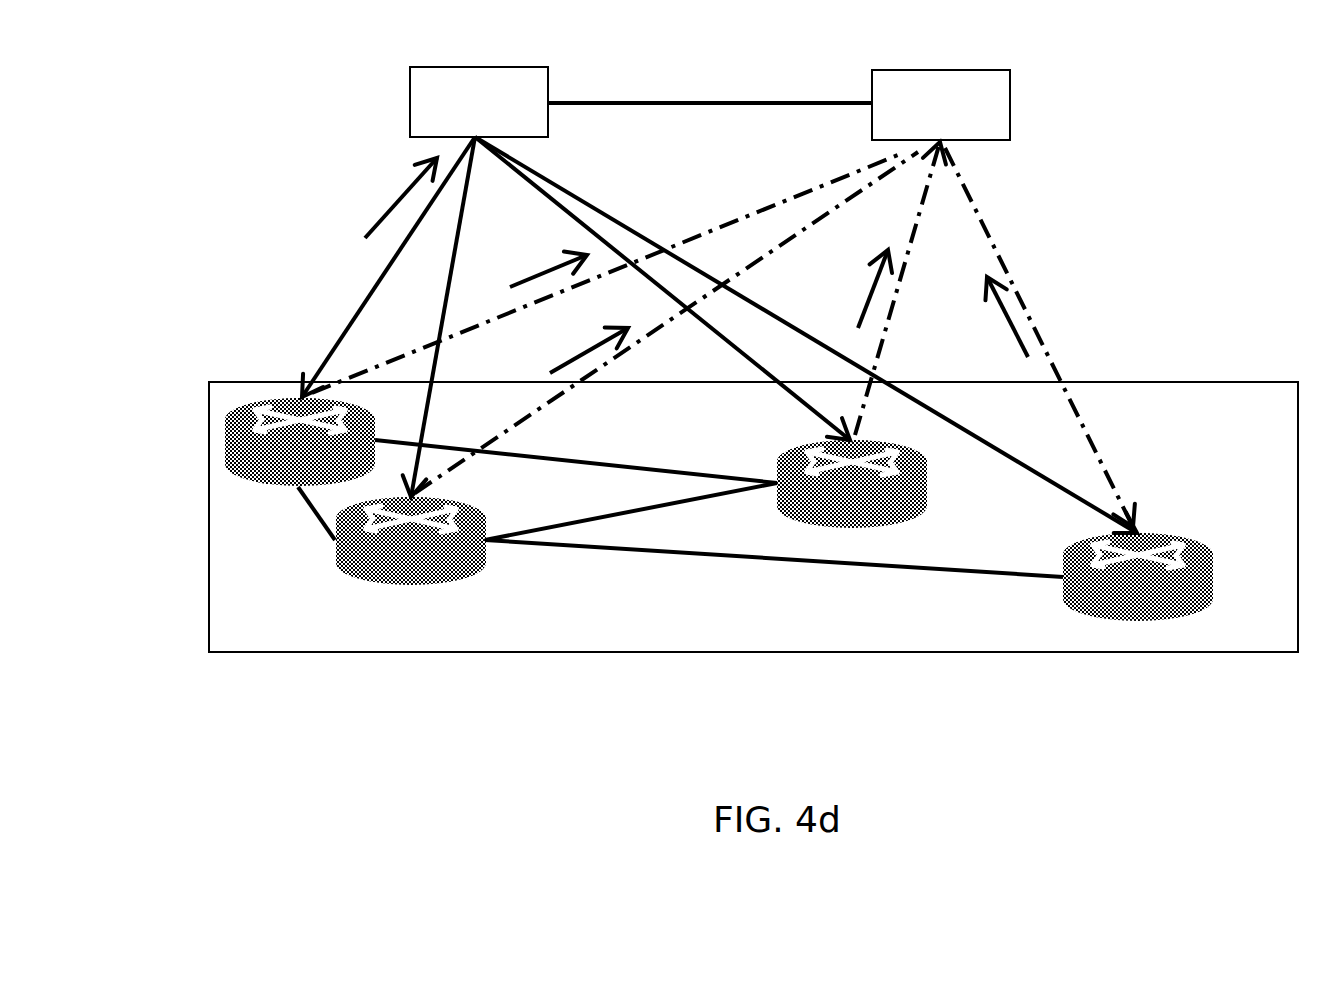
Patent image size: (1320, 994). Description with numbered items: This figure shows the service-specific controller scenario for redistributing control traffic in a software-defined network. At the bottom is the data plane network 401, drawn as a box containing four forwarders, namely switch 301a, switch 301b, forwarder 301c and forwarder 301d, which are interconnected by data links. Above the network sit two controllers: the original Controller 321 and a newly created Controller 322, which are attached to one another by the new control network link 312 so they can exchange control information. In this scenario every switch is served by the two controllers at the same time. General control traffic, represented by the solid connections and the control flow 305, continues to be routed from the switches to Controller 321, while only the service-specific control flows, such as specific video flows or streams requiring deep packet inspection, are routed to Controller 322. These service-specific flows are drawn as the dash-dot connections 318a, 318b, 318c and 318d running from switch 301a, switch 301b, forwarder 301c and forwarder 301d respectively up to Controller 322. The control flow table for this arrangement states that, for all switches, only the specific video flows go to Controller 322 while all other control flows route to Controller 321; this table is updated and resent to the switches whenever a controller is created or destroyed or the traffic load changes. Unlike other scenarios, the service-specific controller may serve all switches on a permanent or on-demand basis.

The Controller 321 is at (479, 102).
The Controller 322 is at (941, 105).
The link 312 is at (725, 106).
The control message flow to controller 321 305 is at (390, 277).
The control message flow from node 301a to controller 322 318a is at (800, 205).
The control message flow from node 301b to controller 322 318b is at (666, 322).
The control message flow from node 301c to controller 322 318c is at (907, 288).
The control message flow from node 301d to controller 322 318d is at (1039, 337).
The switch 301a is at (228, 440).
The network node (router) 301b is at (336, 541).
The forwarder 301c is at (927, 488).
The forwarder 301d is at (1192, 612).
The data plane network 401 is at (753, 517).